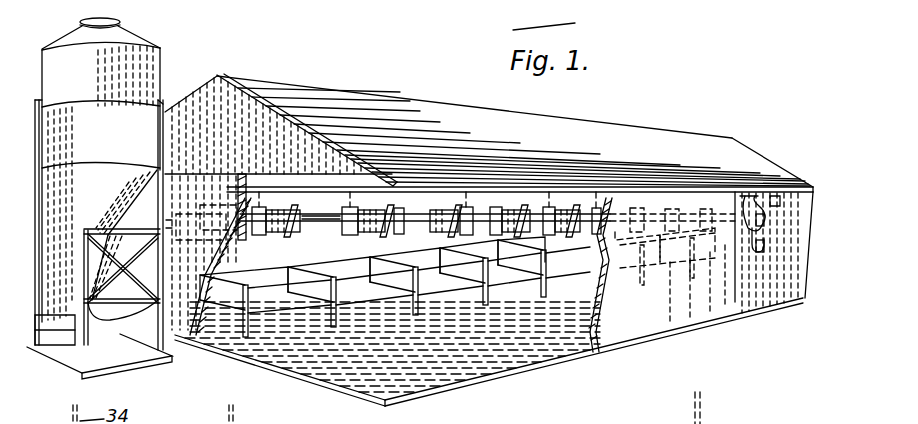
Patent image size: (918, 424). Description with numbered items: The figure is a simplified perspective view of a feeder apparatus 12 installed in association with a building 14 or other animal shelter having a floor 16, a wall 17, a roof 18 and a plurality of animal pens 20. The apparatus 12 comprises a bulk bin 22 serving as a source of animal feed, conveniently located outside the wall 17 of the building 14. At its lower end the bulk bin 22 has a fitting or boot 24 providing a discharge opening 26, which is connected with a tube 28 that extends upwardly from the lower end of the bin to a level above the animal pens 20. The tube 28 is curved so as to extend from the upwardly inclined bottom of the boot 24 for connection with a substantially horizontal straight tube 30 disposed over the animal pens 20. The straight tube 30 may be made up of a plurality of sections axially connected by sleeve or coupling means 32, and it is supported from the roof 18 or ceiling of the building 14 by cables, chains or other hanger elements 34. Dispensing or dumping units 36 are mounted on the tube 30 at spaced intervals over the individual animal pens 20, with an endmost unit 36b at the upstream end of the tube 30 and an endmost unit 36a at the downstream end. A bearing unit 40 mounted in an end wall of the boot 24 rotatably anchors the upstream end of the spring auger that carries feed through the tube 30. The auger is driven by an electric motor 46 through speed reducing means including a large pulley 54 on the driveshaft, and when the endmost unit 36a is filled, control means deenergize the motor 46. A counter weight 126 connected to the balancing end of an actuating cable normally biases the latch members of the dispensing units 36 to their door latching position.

The feeder apparatus 12 is at (482, 159).
The building 14 is at (627, 124).
The floor 16 is at (285, 358).
The wall 17 is at (200, 340).
The roof 18 is at (522, 125).
The animal pens 20 is at (428, 303).
The bulk bin 22 is at (152, 73).
The boot 24 is at (82, 350).
The discharge opening 26 is at (97, 357).
The tube 28 is at (115, 305).
The straight tube 30 is at (250, 217).
The coupling means 32 is at (332, 216).
The hanger elements 34 is at (254, 207).
The dispensing units 36 is at (386, 210).
The endmost unit 36a is at (735, 192).
The endmost unit 36b is at (193, 211).
The bearing unit 40 is at (43, 348).
The electric motor 46 is at (764, 220).
The large pulley 54 is at (771, 197).
The counter weight 126 is at (764, 246).